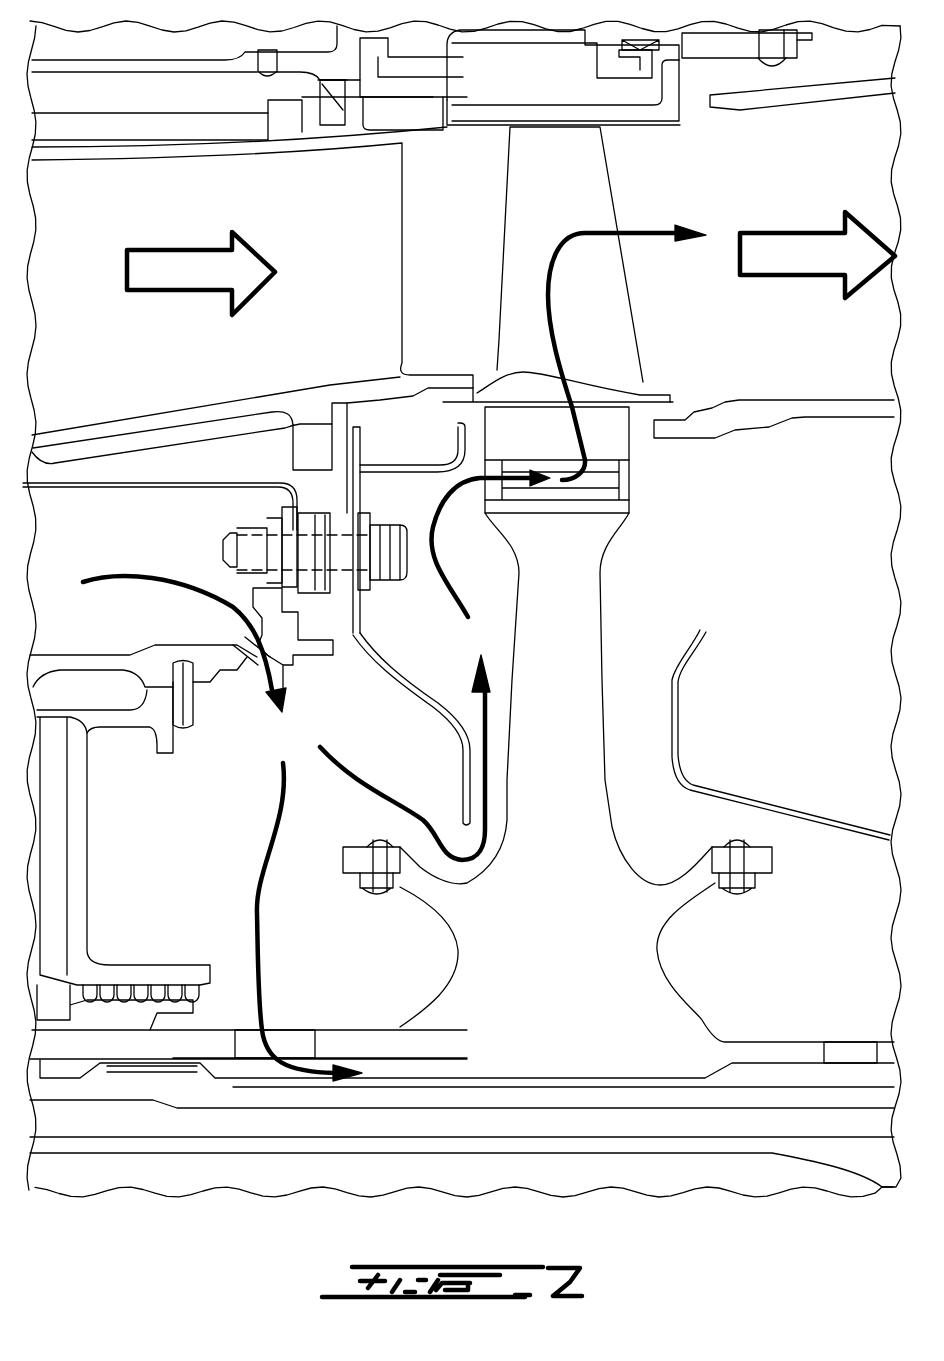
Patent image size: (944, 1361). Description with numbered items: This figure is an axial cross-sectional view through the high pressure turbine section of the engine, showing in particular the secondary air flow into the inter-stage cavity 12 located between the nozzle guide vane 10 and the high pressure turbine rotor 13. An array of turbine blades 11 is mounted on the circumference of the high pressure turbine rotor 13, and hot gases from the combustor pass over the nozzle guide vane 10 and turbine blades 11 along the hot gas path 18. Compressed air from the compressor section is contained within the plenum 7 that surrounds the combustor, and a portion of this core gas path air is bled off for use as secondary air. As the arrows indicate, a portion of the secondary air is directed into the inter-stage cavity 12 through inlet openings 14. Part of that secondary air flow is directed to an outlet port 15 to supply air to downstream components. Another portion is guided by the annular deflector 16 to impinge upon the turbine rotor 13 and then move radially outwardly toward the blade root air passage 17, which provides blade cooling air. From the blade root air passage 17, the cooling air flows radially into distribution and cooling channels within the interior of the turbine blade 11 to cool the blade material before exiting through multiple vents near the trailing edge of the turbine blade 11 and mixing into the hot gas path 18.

The plenum 7 is at (120, 540).
The nozzle guide vane 10 is at (198, 373).
The turbine blades 11 is at (607, 157).
The inter-stage cavity 12 is at (193, 850).
The high pressure turbine rotor 13 is at (560, 823).
The inlet openings 14 is at (262, 625).
The outlet port 15 is at (213, 1063).
The annular deflector 16 is at (433, 707).
The blade root air passage 17 is at (550, 495).
The hot gas path 18 is at (750, 340).